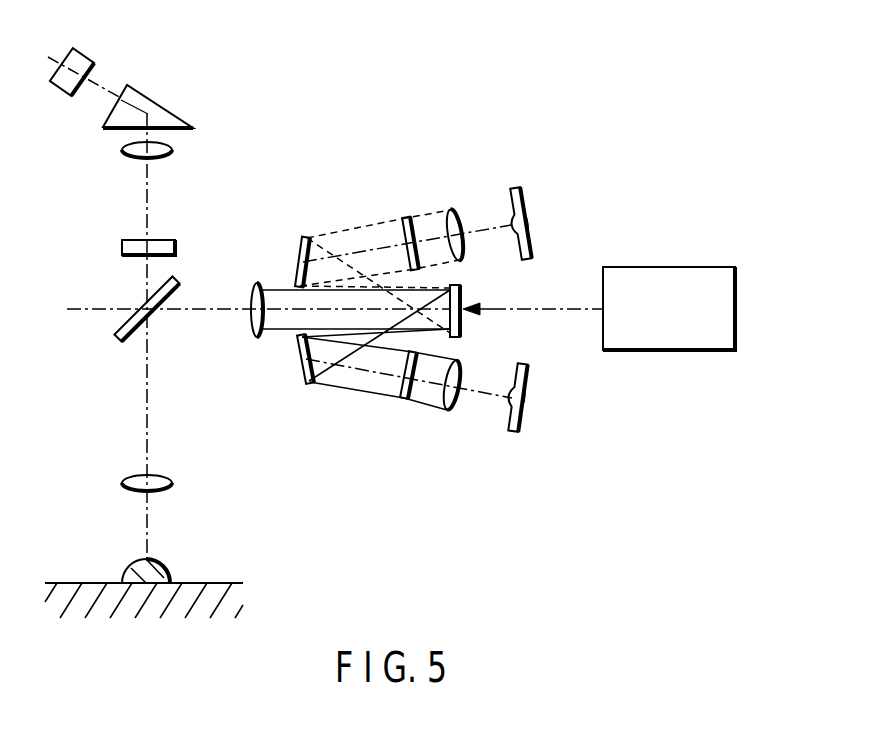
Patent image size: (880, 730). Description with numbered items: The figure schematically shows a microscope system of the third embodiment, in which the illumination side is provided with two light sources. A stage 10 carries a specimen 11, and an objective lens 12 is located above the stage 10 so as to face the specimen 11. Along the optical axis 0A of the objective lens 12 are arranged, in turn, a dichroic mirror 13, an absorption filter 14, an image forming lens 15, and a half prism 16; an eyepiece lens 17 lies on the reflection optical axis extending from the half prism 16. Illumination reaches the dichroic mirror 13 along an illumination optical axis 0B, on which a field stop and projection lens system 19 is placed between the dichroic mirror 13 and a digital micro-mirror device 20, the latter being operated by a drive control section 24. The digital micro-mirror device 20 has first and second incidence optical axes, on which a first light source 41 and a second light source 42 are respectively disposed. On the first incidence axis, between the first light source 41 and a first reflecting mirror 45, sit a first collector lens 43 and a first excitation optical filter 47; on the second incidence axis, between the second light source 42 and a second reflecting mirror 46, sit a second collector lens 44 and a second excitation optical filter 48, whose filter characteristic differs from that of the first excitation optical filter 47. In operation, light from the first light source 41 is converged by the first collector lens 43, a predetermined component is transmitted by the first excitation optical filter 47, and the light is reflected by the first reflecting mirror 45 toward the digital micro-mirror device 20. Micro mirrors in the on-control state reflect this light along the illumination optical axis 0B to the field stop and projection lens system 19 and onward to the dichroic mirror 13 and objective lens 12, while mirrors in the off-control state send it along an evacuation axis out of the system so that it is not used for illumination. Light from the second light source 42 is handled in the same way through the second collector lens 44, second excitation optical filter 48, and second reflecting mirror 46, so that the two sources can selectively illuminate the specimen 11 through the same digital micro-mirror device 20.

The stage 10 is at (226, 583).
The specimen 11 is at (123, 575).
The objective lens 12 is at (121, 485).
The dichroic mirror 13 is at (115, 335).
The absorption filter 14 is at (121, 248).
The image forming lens 15 is at (121, 150).
The half prism 16 is at (152, 98).
The eyepiece lens 17 is at (82, 52).
The field stop and projection lens system 19 is at (256, 283).
The digital micro-mirror device 20 is at (462, 287).
The drive control section 24 is at (735, 312).
The first light source 41 is at (524, 421).
The second light source 42 is at (529, 193).
The first collector lens 43 is at (449, 412).
The second collector lens 44 is at (450, 209).
The first reflecting mirror 45 is at (309, 390).
The second reflecting mirror 46 is at (306, 234).
The first excitation optical filter 47 is at (406, 402).
The second excitation optical filter 48 is at (404, 216).
The optical axis OA 0A is at (150, 441).
The illumination optical axis OB 0B is at (192, 312).